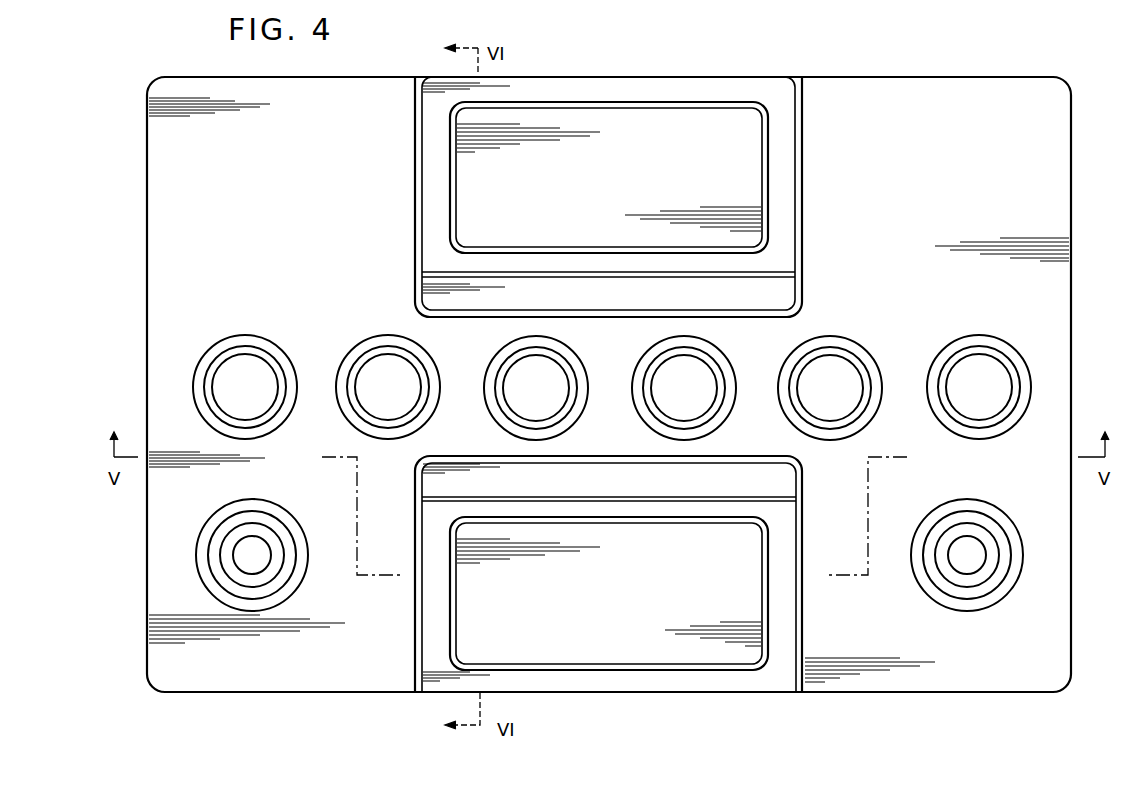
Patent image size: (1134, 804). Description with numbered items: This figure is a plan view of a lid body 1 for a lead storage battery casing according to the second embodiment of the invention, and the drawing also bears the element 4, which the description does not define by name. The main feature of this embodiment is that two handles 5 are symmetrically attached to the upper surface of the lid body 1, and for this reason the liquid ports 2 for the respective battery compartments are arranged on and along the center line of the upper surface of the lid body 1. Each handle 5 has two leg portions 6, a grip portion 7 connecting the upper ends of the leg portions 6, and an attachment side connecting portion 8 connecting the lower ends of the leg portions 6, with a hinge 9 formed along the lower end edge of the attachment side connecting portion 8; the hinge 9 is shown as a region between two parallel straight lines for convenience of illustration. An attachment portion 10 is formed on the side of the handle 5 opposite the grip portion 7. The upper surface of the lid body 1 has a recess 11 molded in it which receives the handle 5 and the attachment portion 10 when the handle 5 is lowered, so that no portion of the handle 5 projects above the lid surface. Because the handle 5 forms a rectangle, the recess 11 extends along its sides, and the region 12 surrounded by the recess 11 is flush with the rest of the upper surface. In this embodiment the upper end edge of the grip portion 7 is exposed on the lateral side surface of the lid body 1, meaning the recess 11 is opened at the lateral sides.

The lid body 1 is at (1008, 72).
The liquid ports 2 is at (210, 380).
The push knob 4 is at (230, 567).
The handle 5 is at (764, 80).
The leg portions 6 is at (430, 178).
The grip portion 7 is at (608, 93).
The attachment side connecting portion 8 is at (745, 263).
The hinge 9 is at (745, 277).
The attachment portion 10 is at (420, 288).
The recess 11 is at (414, 222).
The region 12 is at (688, 120).